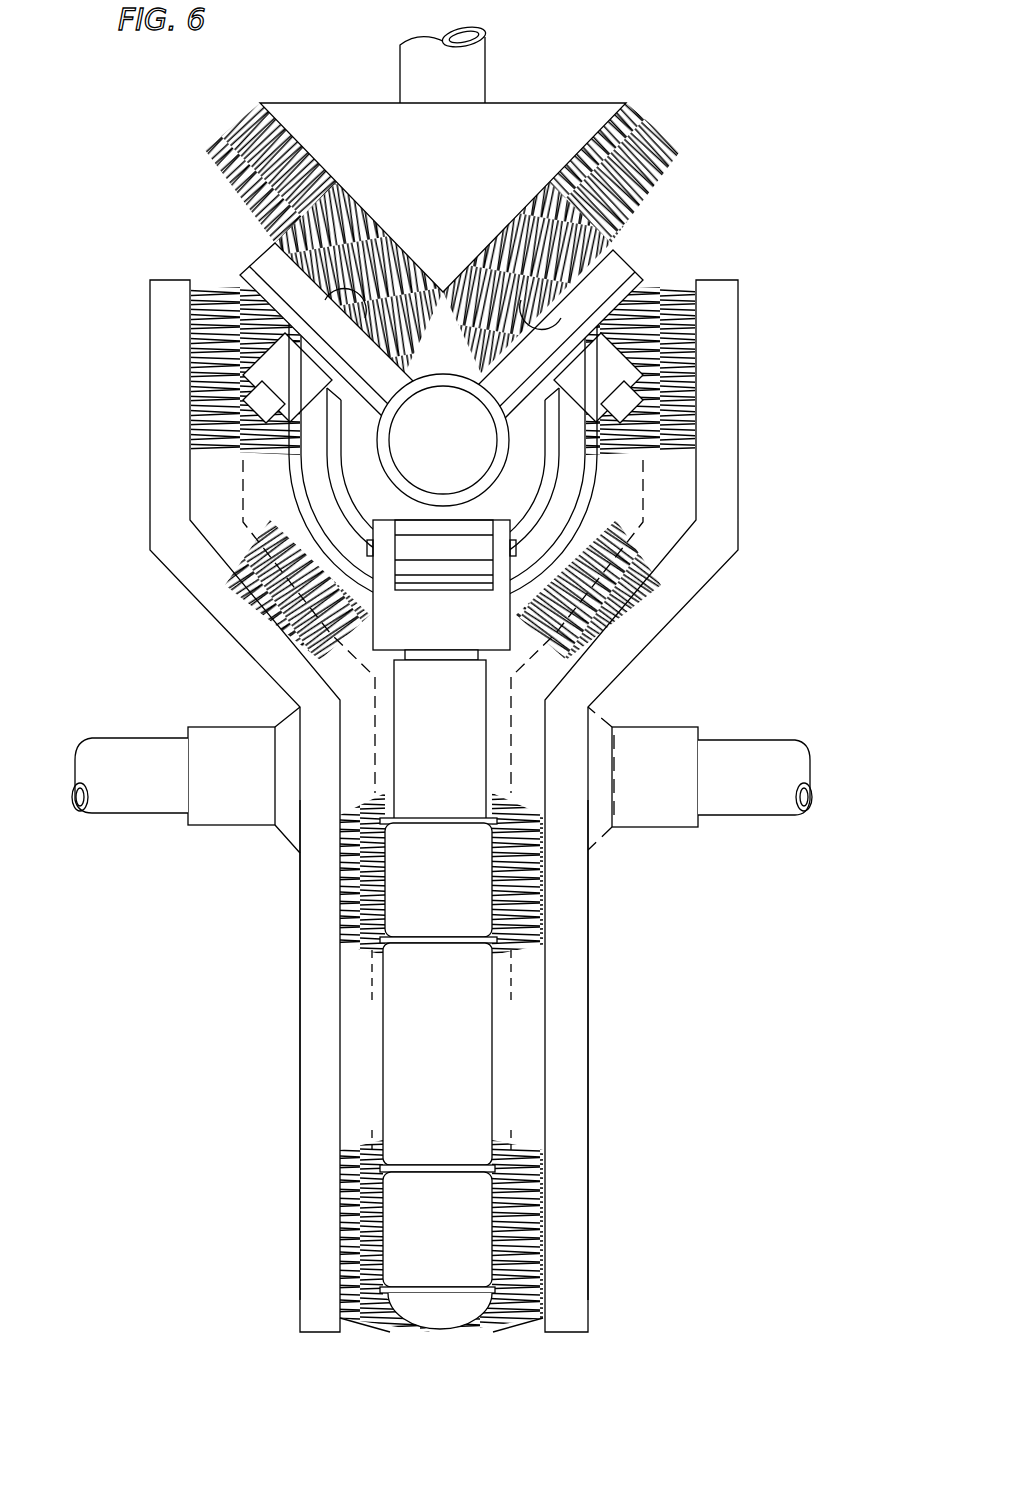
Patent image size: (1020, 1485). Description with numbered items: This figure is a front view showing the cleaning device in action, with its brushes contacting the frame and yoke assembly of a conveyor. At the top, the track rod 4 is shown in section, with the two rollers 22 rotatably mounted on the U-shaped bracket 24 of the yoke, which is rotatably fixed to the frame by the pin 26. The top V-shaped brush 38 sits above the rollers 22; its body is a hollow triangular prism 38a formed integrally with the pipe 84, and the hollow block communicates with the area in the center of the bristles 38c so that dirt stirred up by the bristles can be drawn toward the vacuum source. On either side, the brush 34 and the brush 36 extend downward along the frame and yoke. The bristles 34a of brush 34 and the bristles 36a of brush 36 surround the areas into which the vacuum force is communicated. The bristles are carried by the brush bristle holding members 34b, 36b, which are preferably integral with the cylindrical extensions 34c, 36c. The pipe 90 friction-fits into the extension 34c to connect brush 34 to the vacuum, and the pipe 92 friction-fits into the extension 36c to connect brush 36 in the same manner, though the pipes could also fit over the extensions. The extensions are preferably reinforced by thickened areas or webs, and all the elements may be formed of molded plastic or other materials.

The rod 4 is at (392, 468).
The rollers 22 is at (252, 258).
The U-shaped bracket 24 is at (584, 496).
The pin 26 is at (432, 1333).
The brush 34 is at (666, 806).
The bristles 34a is at (521, 1335).
The brush bristle holding member 34b is at (591, 986).
The cylindrical extension 34c is at (643, 832).
The brush 36 is at (245, 806).
The bristles 36a is at (375, 1335).
The brush bristle holding member 36b is at (297, 1082).
The cylindrical extension 36c is at (215, 828).
The top V-shaped brush 38 is at (401, 200).
The hollow triangular prism 38a is at (545, 103).
The bristles 38c is at (207, 182).
The pipe 84 is at (488, 64).
The pipe 90 is at (772, 742).
The pipe 92 is at (132, 814).